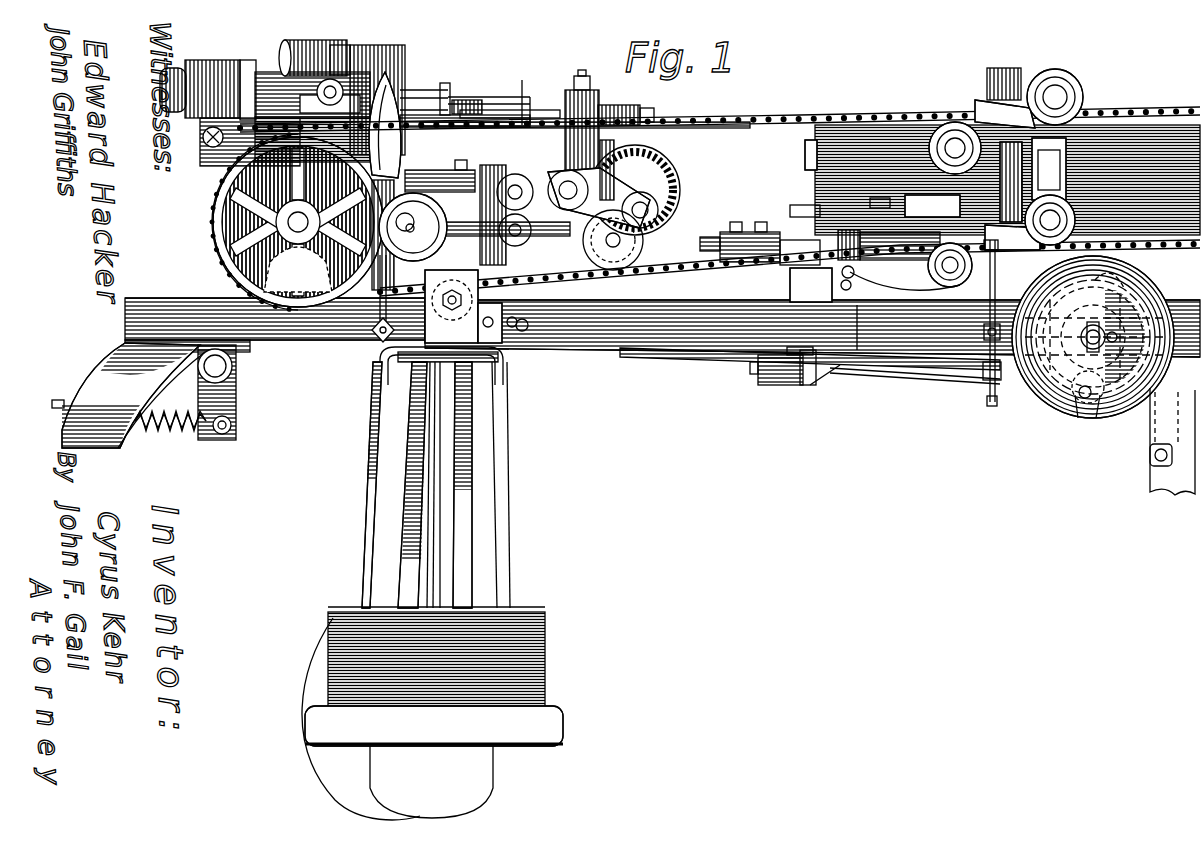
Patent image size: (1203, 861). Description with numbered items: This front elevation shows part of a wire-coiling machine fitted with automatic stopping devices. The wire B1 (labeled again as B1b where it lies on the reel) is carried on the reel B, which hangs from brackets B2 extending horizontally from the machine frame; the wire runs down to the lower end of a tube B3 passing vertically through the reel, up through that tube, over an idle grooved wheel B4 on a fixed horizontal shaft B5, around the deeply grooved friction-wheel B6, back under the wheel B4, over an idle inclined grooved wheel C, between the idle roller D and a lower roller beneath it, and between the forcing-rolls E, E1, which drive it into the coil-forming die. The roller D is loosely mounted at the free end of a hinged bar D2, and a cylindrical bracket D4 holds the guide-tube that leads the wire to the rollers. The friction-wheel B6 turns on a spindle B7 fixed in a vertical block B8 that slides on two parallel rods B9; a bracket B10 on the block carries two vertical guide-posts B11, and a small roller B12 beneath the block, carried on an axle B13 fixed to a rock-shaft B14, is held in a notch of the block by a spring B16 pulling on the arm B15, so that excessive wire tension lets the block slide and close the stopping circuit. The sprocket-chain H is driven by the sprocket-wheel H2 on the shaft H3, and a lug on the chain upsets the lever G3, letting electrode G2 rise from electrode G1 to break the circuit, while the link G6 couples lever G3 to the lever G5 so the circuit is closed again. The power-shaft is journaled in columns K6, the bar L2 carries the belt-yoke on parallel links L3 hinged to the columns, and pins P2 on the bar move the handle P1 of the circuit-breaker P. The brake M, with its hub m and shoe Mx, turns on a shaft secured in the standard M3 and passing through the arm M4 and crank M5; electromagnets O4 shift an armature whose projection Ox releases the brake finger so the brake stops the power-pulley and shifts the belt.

The sprocket-chain H is at (740, 110).
The sprocket-wheel H2 is at (215, 192).
The shaft H3 is at (262, 246).
The brake M is at (200, 147).
The standard M3 is at (327, 117).
The arm M4 is at (212, 65).
The crank M5 is at (176, 74).
The hub m is at (248, 64).
The electromagnets O4 is at (312, 42).
The brake-shoe Mx is at (340, 44).
The projection Ox is at (380, 45).
The circuit-breaker P is at (418, 80).
The handle P1 is at (510, 102).
The pins P2 is at (508, 80).
The horizontal bar L2 is at (532, 115).
The parallel links L3 is at (470, 100).
The columns K6 is at (468, 95).
The roller D is at (512, 172).
The bar D2 is at (526, 175).
The bracket D4 is at (468, 170).
The forcing-roll E is at (640, 158).
The forcing-roll E1 is at (618, 286).
The idle inclined grooved wheel C is at (409, 261).
The electrode G1 is at (812, 385).
The electrode G2 is at (857, 308).
The lever G3 is at (875, 282).
The lever G5 is at (1150, 250).
The link G6 is at (932, 265).
The reel B is at (425, 477).
The wire B1 is at (918, 368).
The basket bottom B1b is at (332, 622).
The brackets B2 is at (455, 378).
The tube B3 is at (440, 558).
The idle grooved wheel B4 is at (451, 306).
The fixed shaft B5 is at (489, 323).
The friction-wheel B6 is at (1093, 337).
The spindle B7 is at (1100, 330).
The block B8 is at (1106, 335).
The parallel rods B9 is at (714, 315).
The bracket B10 is at (1002, 358).
The posts B11 is at (986, 382).
The roller B12 is at (1094, 400).
The axle B13 is at (1088, 398).
The rock-shaft B14 is at (848, 368).
The arm B15 is at (1172, 441).
The contracting spring B16 is at (1152, 462).